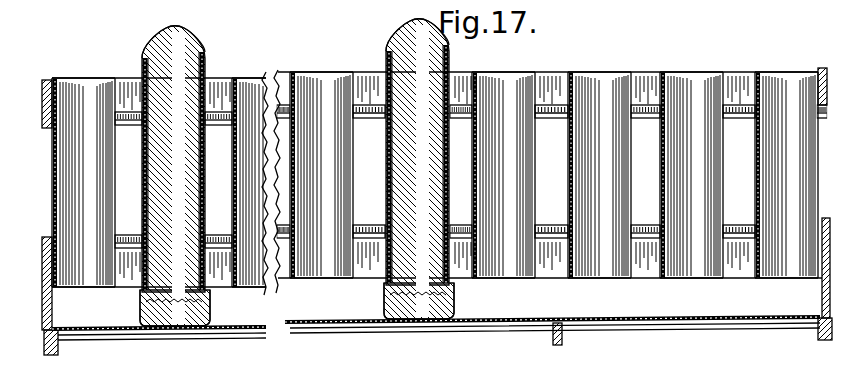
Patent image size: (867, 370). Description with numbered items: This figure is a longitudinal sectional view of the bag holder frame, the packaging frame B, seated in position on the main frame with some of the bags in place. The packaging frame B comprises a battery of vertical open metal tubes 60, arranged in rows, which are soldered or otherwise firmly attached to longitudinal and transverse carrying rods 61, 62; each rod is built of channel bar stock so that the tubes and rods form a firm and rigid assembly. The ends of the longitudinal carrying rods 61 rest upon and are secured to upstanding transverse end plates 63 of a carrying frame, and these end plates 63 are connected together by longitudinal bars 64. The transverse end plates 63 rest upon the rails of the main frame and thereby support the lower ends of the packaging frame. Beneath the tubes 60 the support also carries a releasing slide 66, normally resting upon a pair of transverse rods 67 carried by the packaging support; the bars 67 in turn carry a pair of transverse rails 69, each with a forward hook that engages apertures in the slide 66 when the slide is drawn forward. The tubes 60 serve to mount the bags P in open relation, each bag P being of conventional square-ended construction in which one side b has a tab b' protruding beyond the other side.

The vertical open metal tubes 60 is at (668, 69).
The longitudinal carrying rods 61 is at (227, 237).
The transverse carrying rods 62 is at (219, 126).
The upstanding transverse end plates 63 is at (41, 97).
The longitudinal bars 64 is at (230, 266).
The releasing slide 66 is at (610, 318).
The transverse rods 67 is at (472, 331).
The transverse rails 69 is at (561, 342).
The packaging frame B is at (305, 68).
The bags P is at (301, 163).
The bag side b is at (301, 167).
The tab b' is at (293, 29).